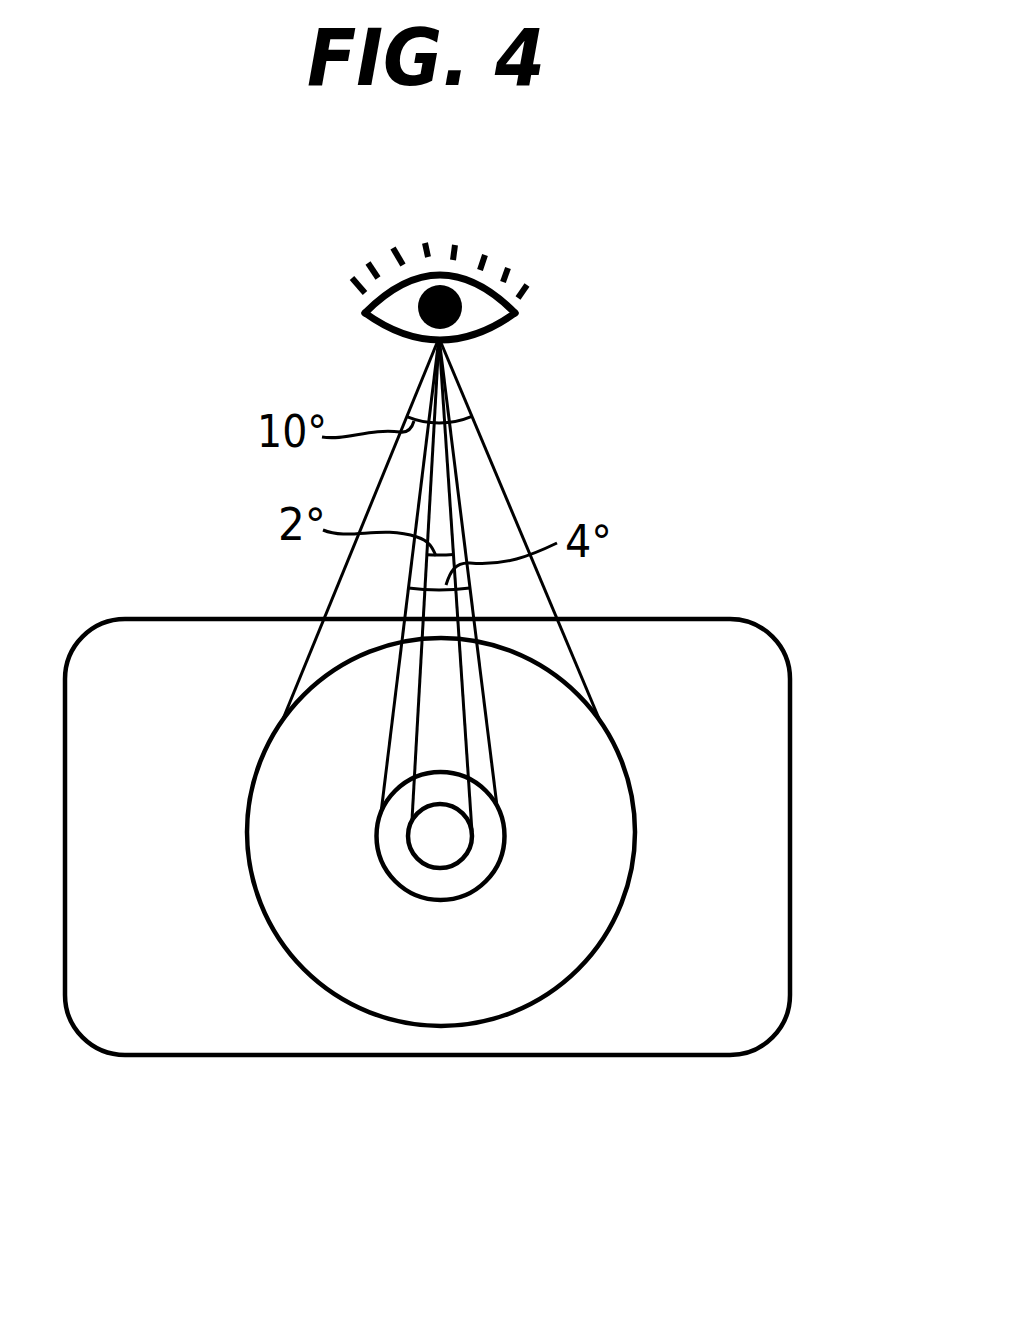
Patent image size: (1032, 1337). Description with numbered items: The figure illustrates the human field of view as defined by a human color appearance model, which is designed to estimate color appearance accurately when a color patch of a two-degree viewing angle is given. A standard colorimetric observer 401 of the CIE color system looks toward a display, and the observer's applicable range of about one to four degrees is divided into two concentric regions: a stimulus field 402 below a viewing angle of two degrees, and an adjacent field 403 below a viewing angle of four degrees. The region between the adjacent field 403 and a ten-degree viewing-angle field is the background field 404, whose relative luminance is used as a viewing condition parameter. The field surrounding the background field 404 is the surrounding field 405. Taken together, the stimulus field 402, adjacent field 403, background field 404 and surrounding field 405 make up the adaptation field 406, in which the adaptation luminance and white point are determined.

The standard colorimetric observer 401 is at (500, 333).
The stimulus field 402 is at (438, 853).
The adjacent field 403 is at (492, 852).
The background field 404 is at (578, 928).
The surrounding field 405 is at (695, 627).
The adaptation field 406 is at (449, 871).